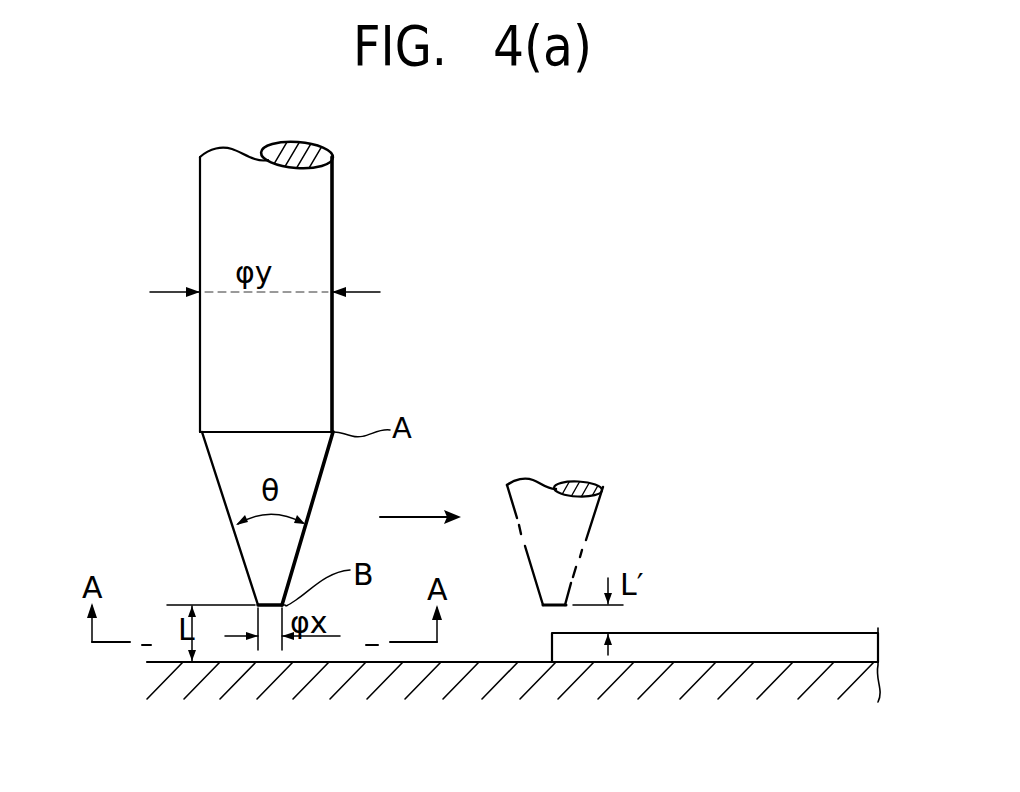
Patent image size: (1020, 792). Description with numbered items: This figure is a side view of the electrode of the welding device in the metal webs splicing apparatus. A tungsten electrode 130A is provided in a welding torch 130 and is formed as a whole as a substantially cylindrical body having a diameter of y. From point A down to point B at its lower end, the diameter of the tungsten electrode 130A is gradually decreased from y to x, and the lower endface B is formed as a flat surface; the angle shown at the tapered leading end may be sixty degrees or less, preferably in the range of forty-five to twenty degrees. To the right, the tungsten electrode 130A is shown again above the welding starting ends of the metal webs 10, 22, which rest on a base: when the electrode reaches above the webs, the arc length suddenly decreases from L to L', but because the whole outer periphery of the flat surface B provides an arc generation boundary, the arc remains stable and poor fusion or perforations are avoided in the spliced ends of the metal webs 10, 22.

The welding torch 130 is at (340, 216).
The tungsten electrode 130A is at (318, 358).
The metal web 10 is at (715, 609).
The metal web 22 is at (768, 647).